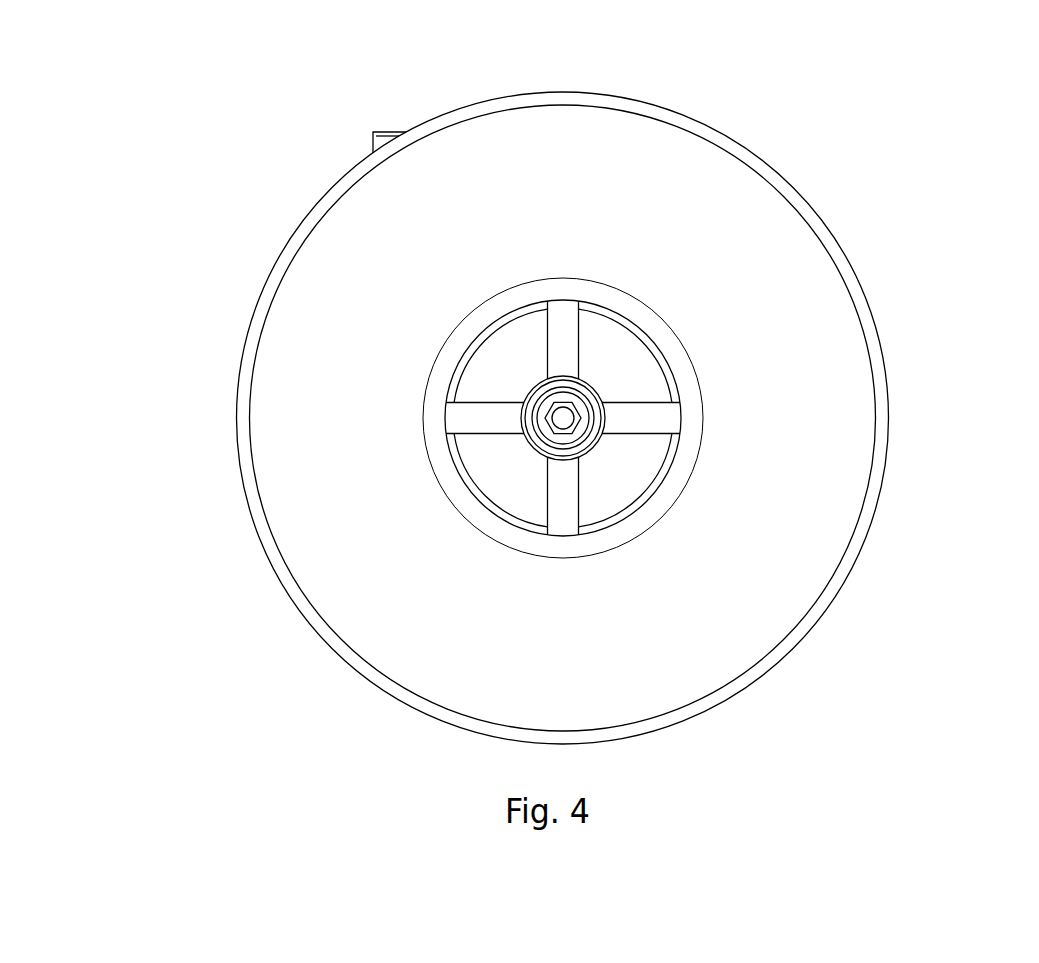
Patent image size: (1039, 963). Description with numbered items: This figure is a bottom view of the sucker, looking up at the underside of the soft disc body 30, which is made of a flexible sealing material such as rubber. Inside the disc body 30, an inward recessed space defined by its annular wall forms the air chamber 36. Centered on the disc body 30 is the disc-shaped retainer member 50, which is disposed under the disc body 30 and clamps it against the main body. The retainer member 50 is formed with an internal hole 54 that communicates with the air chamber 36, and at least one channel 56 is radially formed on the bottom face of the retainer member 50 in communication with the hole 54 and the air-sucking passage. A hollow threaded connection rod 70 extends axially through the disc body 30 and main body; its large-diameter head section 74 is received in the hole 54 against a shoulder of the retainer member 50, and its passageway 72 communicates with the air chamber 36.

The disc body 30 is at (838, 218).
The air chamber 36 is at (651, 667).
The retainer member 50 is at (510, 366).
The internal hole 54 is at (592, 448).
The channel 56 is at (558, 500).
The connection rod 70 is at (597, 397).
The passageway 72 is at (563, 418).
The large-diameter head section 74 is at (545, 437).